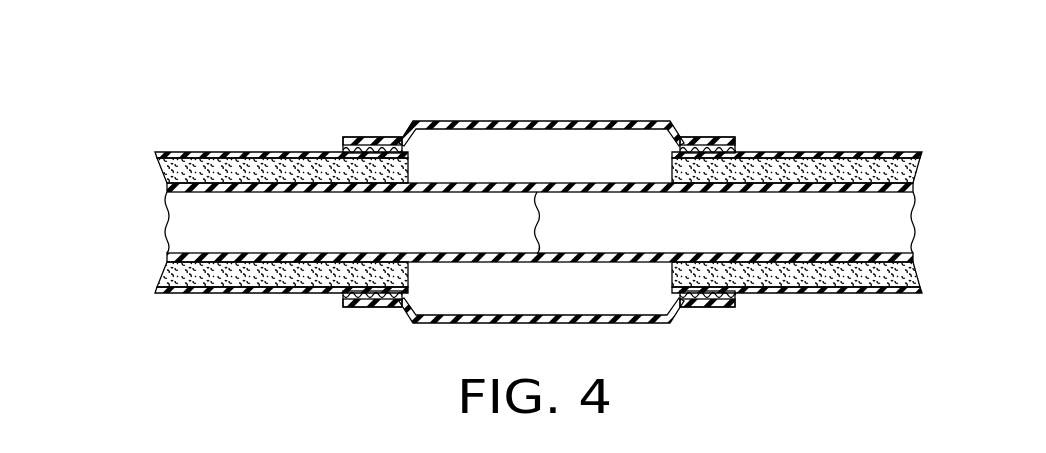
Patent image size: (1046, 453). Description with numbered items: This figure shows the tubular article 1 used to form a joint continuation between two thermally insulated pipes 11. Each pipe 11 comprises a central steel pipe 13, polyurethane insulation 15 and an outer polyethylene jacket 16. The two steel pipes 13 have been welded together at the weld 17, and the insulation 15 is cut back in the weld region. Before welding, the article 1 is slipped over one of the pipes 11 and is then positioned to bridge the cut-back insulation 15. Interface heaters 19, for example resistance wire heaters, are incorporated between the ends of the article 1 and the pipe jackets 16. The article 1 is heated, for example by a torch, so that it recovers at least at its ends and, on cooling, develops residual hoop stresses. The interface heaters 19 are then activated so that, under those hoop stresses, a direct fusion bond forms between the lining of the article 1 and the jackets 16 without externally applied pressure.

The tubular article 1 is at (572, 108).
The thermally insulated pipe 11 is at (486, 190).
The central steel pipe 13 is at (270, 231).
The polyurethane insulation 15 is at (160, 172).
The outer polyethylene jacket 16 is at (157, 154).
The weld 17 is at (537, 212).
The interface heater 19 is at (342, 151).